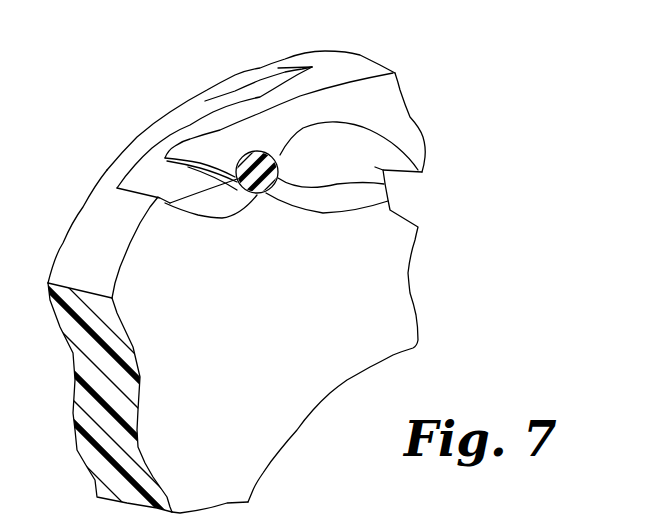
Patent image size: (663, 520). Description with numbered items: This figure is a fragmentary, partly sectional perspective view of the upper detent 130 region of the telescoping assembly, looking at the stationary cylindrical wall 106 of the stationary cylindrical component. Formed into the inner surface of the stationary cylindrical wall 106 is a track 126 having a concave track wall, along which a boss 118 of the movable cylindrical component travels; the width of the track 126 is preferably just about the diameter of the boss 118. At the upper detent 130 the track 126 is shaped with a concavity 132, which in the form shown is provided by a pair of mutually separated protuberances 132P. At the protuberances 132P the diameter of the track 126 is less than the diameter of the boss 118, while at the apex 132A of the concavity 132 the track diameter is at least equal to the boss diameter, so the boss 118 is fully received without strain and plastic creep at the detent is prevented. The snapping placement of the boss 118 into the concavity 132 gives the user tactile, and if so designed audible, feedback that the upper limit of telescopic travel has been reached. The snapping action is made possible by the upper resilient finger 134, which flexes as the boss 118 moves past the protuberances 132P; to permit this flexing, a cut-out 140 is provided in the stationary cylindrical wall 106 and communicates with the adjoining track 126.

The stationary cylindrical wall 106 is at (219, 345).
The boss 118 is at (270, 190).
The track 126 is at (385, 205).
The upper detent 130 is at (258, 194).
The concavity 132 is at (278, 166).
The apex 132A is at (238, 170).
The protuberance 132P is at (276, 160).
The upper resilient finger 134 is at (258, 96).
The cut-out 140 is at (185, 123).